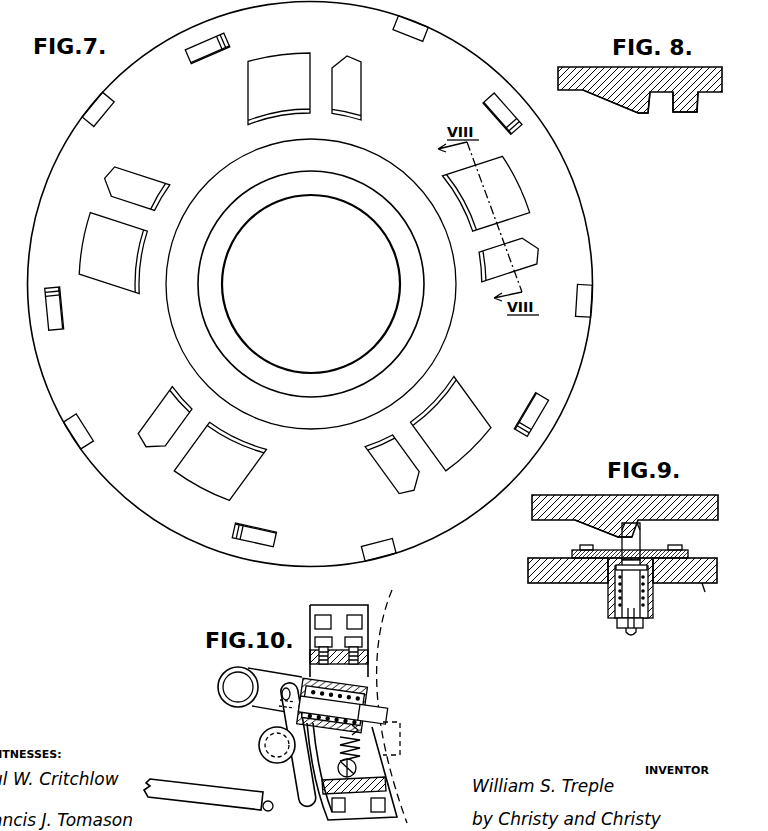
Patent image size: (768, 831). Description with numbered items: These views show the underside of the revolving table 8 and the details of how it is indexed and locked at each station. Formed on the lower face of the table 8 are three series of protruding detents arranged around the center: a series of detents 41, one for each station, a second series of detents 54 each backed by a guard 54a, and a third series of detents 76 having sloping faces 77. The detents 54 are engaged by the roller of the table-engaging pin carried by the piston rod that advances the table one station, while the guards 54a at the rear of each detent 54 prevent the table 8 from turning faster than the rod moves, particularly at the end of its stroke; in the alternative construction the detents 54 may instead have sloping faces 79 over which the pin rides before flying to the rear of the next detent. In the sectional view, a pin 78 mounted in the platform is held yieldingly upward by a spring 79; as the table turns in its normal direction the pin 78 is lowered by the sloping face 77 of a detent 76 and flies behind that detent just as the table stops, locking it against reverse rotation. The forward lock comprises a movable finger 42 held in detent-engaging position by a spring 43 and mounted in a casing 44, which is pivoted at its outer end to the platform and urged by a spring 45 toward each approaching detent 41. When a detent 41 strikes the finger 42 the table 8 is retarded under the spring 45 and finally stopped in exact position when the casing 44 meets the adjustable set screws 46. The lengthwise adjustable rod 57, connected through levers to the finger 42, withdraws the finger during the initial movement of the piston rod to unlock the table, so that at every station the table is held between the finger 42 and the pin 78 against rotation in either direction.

In FIG. 7, the table 8 is at (146, 507).
In FIG. 8, the table 8 is at (719, 82).
In FIG. 9, the table 8 is at (532, 509).
In FIG. 7, the detents 41 is at (395, 22).
In FIG. 10, the detents 41 is at (401, 733).
In FIG. 10, the movable finger 42 is at (382, 706).
In FIG. 10, the spring 43 is at (356, 685).
In FIG. 10, the finger casing 44 is at (258, 708).
In FIG. 10, the spring 45 is at (363, 758).
In FIG. 10, the adjustable set screws 46 is at (334, 637).
In FIG. 7, the detents 54 is at (248, 86).
In FIG. 8, the detents 54 is at (640, 113).
In FIG. 7, the guards 54a is at (361, 91).
In FIG. 8, the guards 54a is at (685, 113).
In FIG. 10, the lengthwise adjustable rod 57 is at (203, 794).
In FIG. 7, the detents 76 is at (233, 38).
In FIG. 9, the detents 76 is at (600, 517).
In FIG. 9, the sloping faces 77 is at (617, 538).
In FIG. 9, the pin 78 is at (640, 531).
In FIG. 8, the spring 79 is at (620, 105).
In FIG. 9, the spring 79 is at (612, 598).